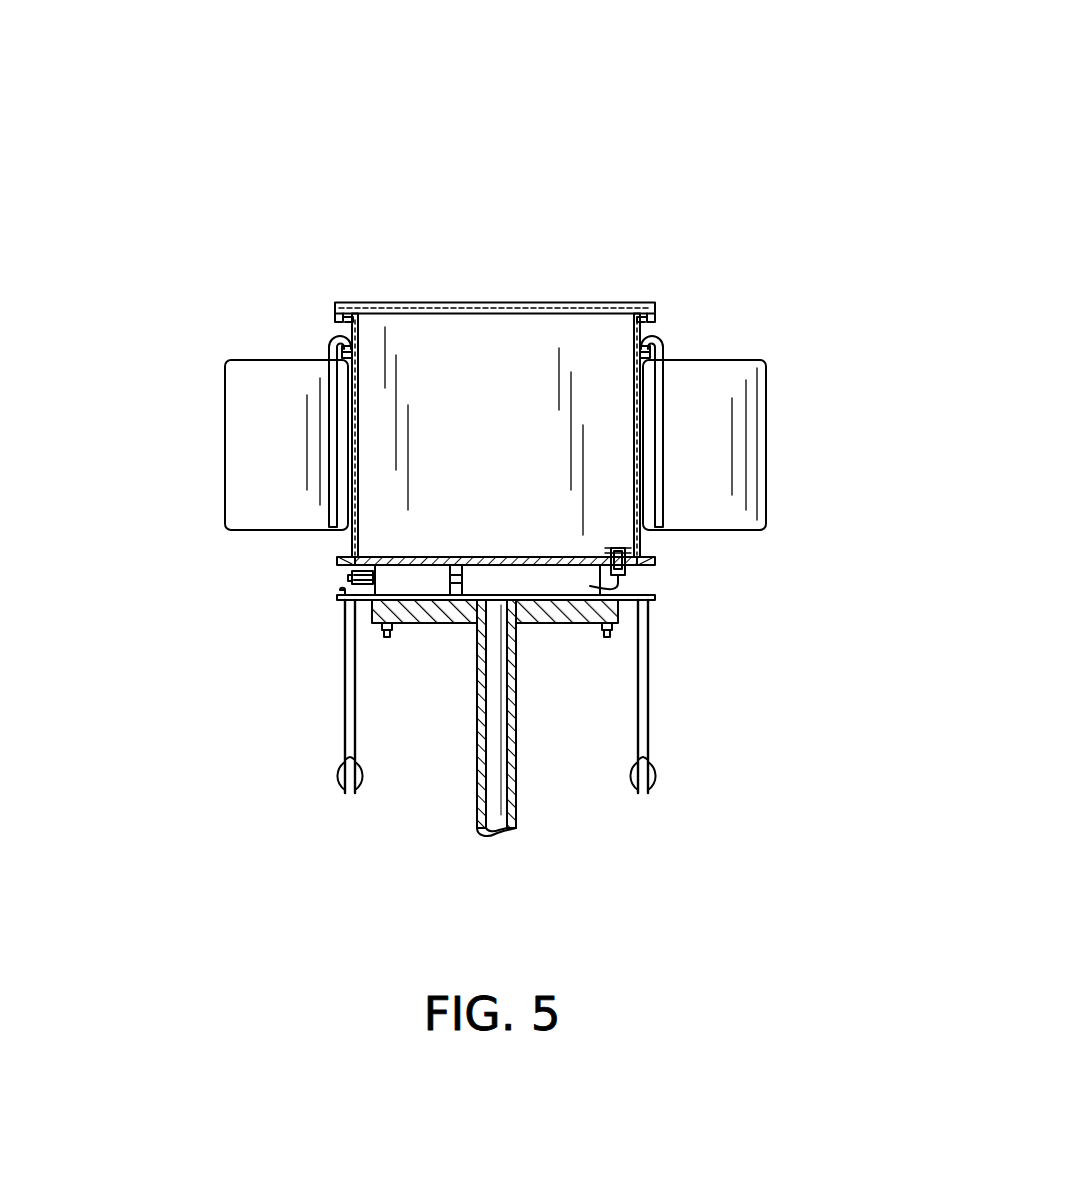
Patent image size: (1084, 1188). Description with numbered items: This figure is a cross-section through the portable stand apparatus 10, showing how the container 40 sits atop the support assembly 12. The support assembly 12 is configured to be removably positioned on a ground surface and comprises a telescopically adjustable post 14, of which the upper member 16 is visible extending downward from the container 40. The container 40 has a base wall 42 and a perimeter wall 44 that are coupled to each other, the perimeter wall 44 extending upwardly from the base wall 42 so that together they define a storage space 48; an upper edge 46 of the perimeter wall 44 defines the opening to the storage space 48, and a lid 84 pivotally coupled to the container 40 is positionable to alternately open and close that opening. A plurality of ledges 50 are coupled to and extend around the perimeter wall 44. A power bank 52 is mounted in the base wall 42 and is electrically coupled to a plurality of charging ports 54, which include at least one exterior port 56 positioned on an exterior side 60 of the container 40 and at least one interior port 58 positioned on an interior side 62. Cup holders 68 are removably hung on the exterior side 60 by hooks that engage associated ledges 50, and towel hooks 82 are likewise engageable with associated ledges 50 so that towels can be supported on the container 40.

The portable stand apparatus 10 is at (748, 167).
The support assembly 12 is at (517, 843).
The post 14 is at (460, 818).
The upper member 16 is at (514, 738).
The container 40 is at (450, 338).
The base wall 42 is at (568, 556).
The perimeter wall 44 is at (358, 390).
The upper edge 46 is at (607, 337).
The storage space 48 is at (500, 324).
The ledges 50 is at (654, 318).
The power bank 52 is at (408, 582).
The charging ports 54 is at (350, 577).
The exterior port 56 is at (346, 591).
The interior port 58 is at (618, 552).
The exterior side 60 is at (640, 443).
The interior side 62 is at (379, 556).
The cup holders 68 is at (215, 396).
The towel hooks 82 is at (343, 730).
The lid 84 is at (448, 302).